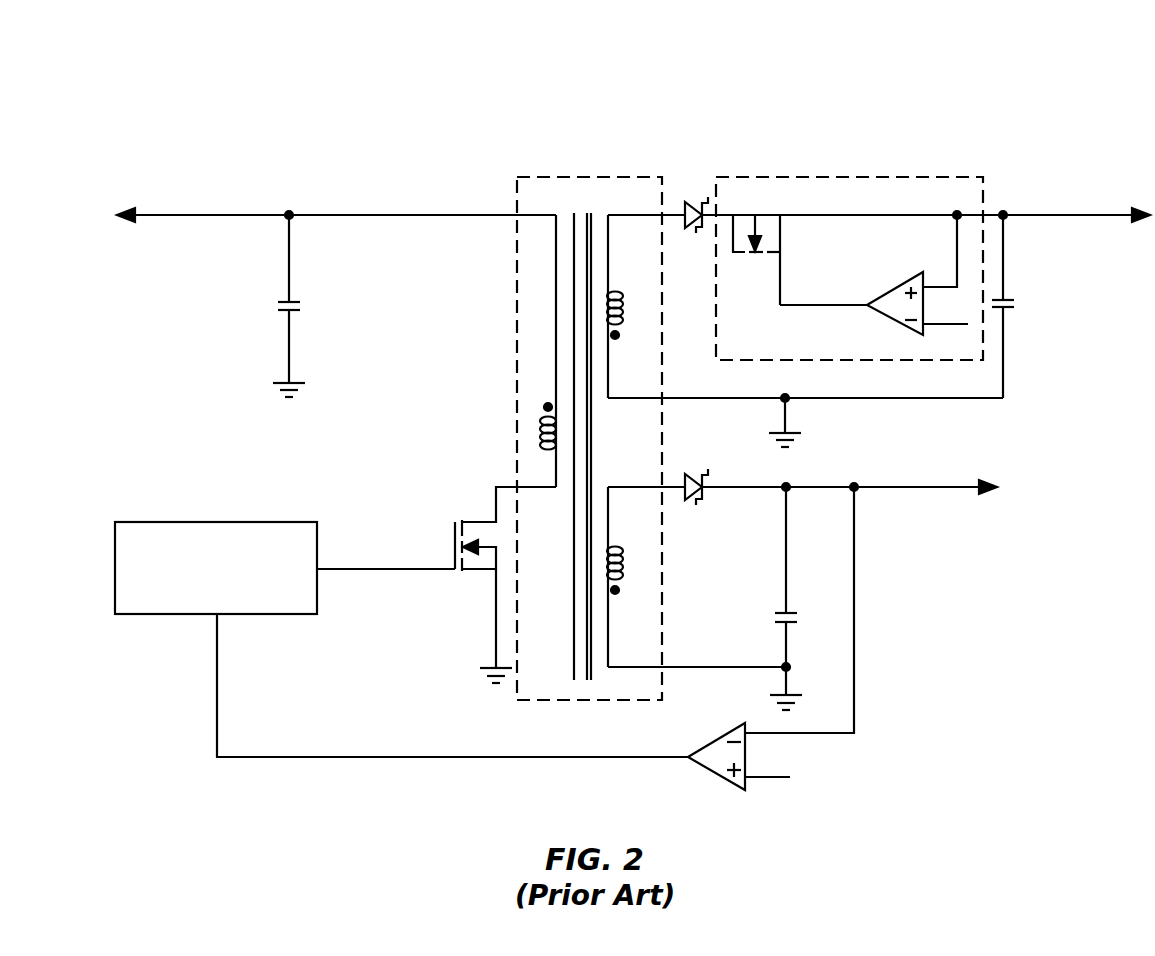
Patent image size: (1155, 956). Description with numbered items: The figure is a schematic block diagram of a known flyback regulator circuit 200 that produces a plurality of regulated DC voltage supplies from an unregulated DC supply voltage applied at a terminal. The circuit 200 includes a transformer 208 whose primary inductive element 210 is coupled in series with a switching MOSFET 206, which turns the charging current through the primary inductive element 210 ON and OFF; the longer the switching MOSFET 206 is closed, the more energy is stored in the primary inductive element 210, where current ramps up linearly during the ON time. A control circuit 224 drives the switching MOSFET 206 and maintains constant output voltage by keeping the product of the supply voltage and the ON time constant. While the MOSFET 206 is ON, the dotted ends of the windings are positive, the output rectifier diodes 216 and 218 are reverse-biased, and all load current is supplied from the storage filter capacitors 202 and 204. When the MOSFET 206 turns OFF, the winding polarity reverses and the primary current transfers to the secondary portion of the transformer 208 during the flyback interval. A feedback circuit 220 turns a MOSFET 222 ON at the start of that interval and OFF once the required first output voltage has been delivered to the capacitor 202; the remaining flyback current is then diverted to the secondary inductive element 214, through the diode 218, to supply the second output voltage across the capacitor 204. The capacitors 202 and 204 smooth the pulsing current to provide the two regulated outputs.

The flyback regulator circuit 200 is at (1010, 92).
The capacitor 202 is at (1010, 300).
The capacitor 204 is at (792, 622).
The switching MOSFET 206 is at (480, 520).
The transformer 208 is at (590, 175).
The primary inductive element 210 is at (540, 417).
The secondary inductive element 214 is at (622, 578).
The output rectifier diode 216 is at (694, 202).
The output rectifier diode 218 is at (700, 478).
The feedback circuit 220 is at (905, 177).
The MOSFET 222 is at (763, 213).
The control circuit 224 is at (160, 521).